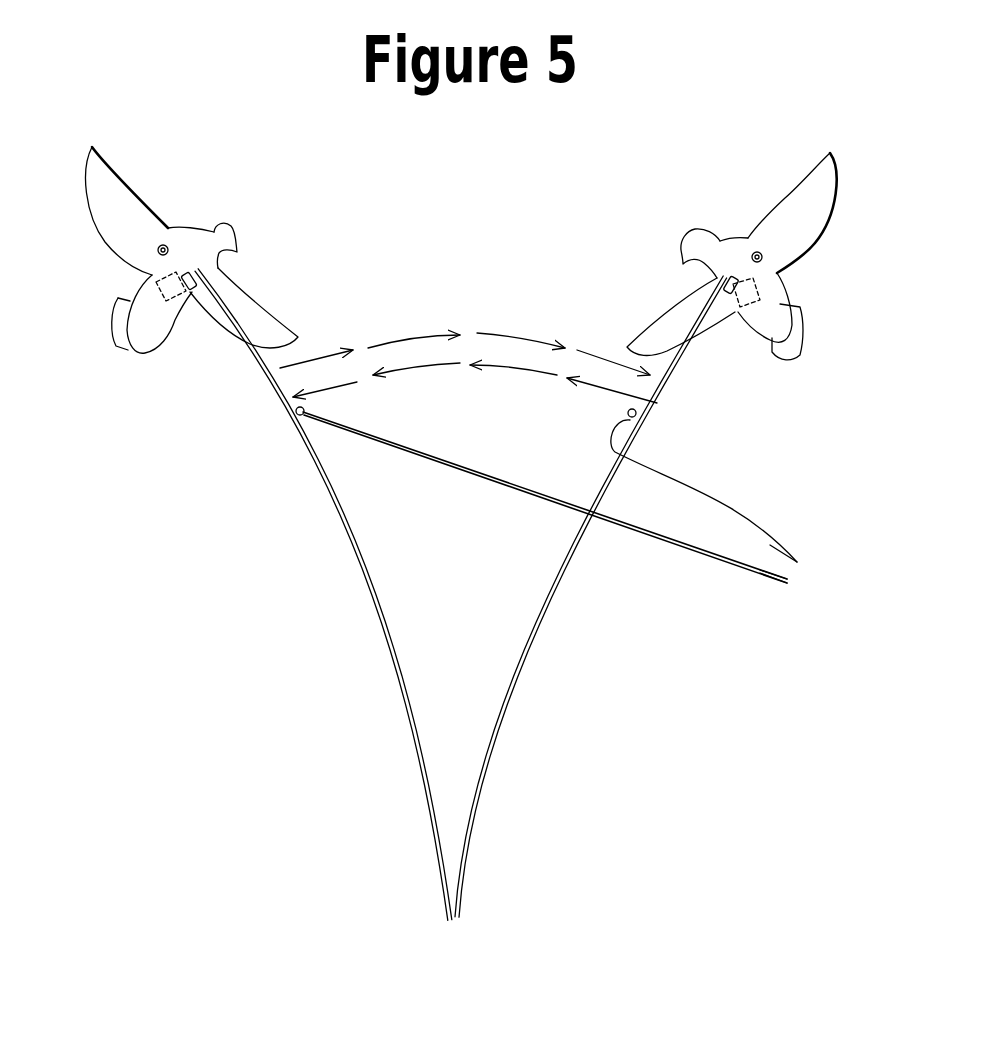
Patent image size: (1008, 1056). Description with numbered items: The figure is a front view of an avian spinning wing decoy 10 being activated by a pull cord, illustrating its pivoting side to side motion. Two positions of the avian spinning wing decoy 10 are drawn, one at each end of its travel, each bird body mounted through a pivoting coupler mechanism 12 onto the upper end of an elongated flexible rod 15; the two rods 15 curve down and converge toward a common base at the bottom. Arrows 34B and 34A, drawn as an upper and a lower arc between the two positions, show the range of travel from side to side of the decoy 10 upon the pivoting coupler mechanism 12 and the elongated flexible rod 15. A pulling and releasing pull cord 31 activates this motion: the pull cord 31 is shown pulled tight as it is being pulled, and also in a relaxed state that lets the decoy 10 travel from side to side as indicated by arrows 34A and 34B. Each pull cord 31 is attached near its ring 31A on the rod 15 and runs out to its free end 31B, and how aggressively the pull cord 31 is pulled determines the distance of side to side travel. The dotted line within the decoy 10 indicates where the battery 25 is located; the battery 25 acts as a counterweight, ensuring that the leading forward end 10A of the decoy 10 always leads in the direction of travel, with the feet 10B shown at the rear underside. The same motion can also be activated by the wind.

The avian spinning wing decoy 10 is at (183, 240).
The leading forward end 10A is at (223, 227).
The decoy feet 10B is at (127, 330).
The pivoting coupler mechanism 12 is at (197, 272).
The battery 25 is at (170, 297).
The elongated flexible rod 15 is at (367, 562).
The pull cord 31 is at (397, 447).
The line attachment ring 31A is at (307, 409).
The line end 31B is at (790, 547).
The arrow 34A is at (453, 365).
The arrow 34B is at (488, 333).